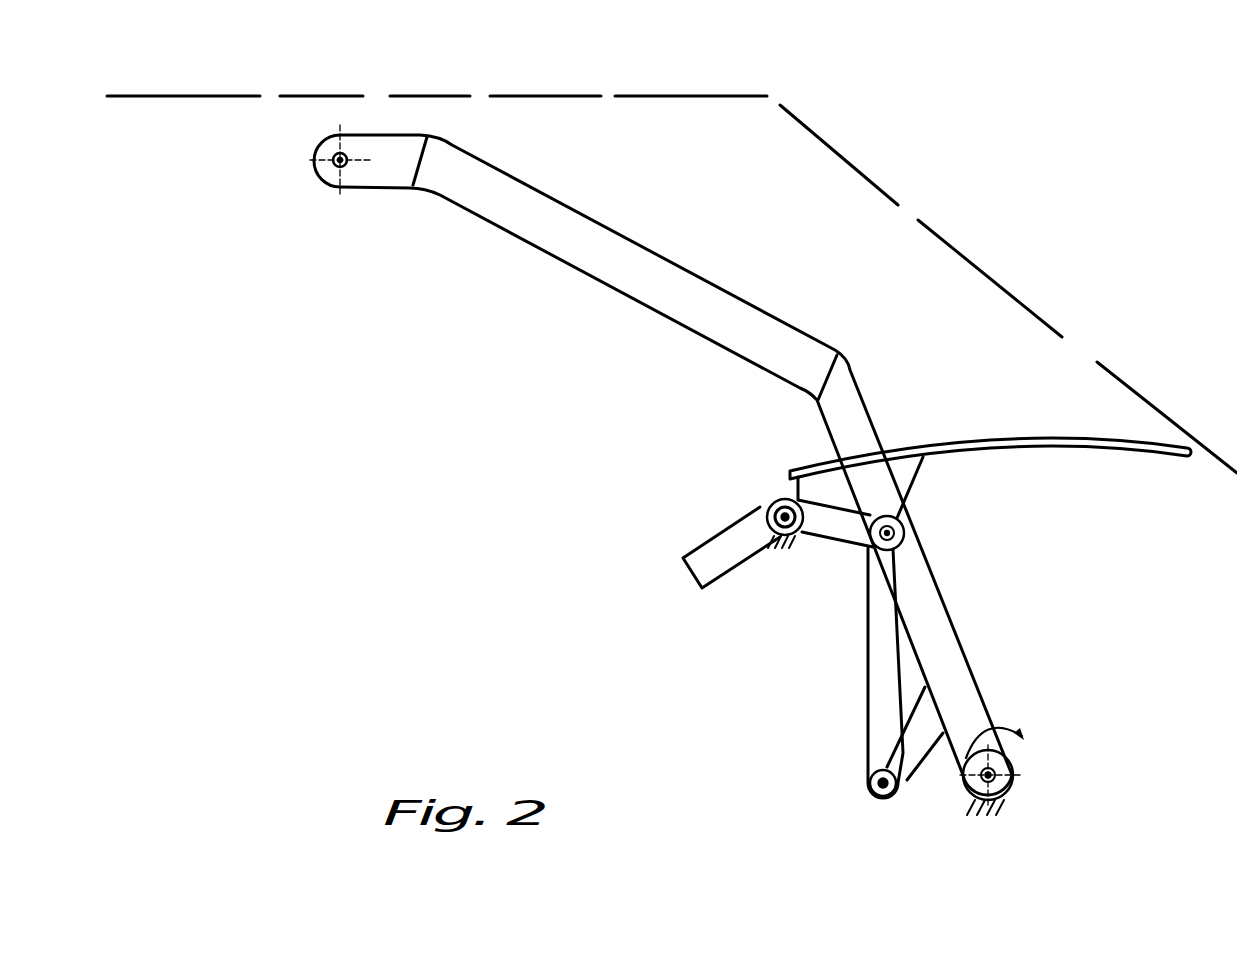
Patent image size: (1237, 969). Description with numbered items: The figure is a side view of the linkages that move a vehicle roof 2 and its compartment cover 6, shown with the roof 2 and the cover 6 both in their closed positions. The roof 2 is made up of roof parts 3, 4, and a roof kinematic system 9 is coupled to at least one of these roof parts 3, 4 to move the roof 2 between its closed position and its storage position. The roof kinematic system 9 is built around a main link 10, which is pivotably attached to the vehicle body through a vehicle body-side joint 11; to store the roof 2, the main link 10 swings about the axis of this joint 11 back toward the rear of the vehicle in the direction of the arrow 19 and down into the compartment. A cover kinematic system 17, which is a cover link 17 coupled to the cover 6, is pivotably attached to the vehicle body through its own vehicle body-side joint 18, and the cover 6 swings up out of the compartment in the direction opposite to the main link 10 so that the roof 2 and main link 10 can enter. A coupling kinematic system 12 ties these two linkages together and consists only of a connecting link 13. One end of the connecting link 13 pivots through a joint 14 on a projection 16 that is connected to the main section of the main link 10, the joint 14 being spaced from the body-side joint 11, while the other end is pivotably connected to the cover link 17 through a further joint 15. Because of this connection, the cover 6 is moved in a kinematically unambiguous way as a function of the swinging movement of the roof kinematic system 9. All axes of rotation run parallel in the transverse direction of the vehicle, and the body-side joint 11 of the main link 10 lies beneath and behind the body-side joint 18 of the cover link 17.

The roof 2 is at (363, 60).
The roof part 3 is at (426, 96).
The roof part 4 is at (940, 233).
The cover 6 is at (1008, 440).
The roof kinematic system 9 is at (525, 252).
The main link 10 is at (665, 275).
The vehicle body-side joint 11 is at (1010, 753).
The coupling kinematic system 12 is at (882, 665).
The connecting link 13 is at (875, 640).
The joint 14 is at (877, 797).
The joint 15 is at (910, 532).
The projection 16 is at (917, 753).
The cover link 17 is at (830, 530).
The vehicle body-side joint 18 is at (777, 505).
The arrow 19 is at (1013, 717).